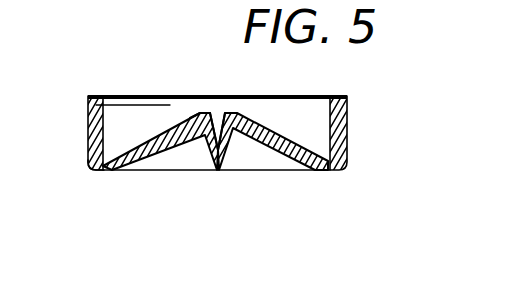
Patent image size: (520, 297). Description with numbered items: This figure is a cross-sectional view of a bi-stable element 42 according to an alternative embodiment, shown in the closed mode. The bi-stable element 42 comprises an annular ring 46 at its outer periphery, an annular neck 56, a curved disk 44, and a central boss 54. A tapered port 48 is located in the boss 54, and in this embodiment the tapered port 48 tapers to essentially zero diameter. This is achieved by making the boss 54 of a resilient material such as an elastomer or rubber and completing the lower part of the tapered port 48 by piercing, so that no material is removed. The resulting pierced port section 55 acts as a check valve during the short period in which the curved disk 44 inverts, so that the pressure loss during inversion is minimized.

The bi-stable element 42 is at (352, 140).
The annular ring 46 is at (88, 137).
The curved disk 44 is at (128, 172).
The annular neck 56 is at (96, 169).
The tapered port 48 is at (200, 145).
The pierced port section 55 is at (221, 150).
The boss 54 is at (229, 137).